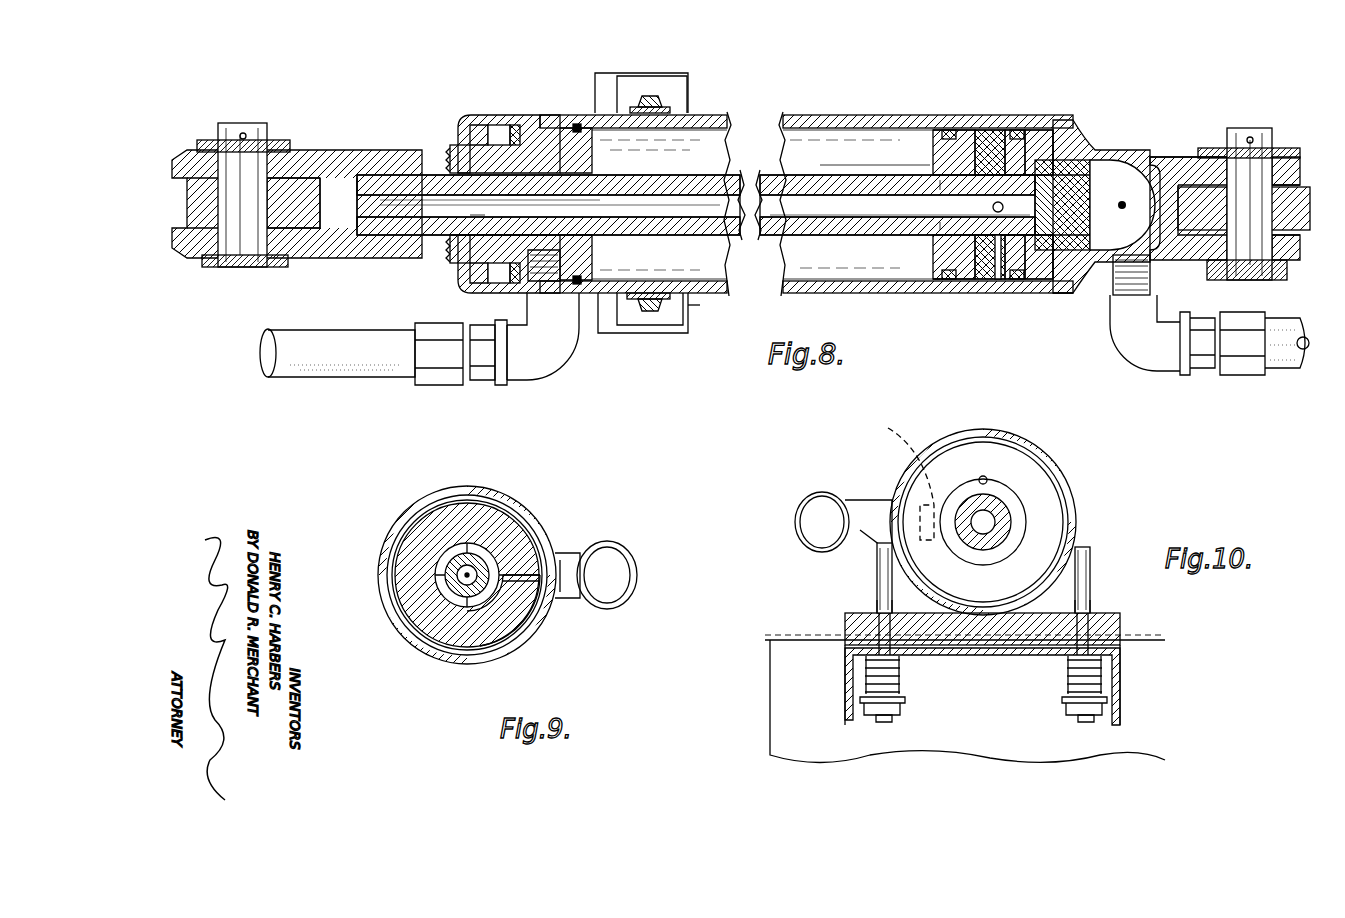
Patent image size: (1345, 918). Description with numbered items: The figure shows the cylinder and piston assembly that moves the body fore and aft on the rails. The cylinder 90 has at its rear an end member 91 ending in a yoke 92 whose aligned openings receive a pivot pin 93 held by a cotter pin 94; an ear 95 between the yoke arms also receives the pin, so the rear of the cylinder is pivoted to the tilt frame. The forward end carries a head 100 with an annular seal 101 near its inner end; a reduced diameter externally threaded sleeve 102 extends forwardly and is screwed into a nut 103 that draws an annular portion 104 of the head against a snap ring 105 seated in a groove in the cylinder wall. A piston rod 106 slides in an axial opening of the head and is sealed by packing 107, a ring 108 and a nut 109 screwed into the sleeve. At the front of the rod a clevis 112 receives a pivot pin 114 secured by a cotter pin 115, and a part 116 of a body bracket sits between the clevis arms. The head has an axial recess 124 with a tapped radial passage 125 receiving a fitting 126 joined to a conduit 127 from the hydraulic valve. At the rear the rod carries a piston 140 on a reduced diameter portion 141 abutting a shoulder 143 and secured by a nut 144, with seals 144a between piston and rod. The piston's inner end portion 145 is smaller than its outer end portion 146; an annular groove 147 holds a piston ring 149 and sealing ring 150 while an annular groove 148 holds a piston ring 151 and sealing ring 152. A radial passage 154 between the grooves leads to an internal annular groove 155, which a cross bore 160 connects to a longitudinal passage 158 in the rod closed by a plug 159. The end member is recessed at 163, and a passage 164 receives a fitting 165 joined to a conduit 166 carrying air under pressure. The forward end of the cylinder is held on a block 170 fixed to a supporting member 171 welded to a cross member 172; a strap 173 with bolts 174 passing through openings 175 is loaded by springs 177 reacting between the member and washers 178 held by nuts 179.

In FIG. 8, the cylinder 90 is at (742, 110).
In FIG. 9, the cylinder 90 is at (386, 528).
In FIG. 10, the cylinder 90 is at (1030, 450).
In FIG. 8, the end member 91 is at (1130, 120).
In FIG. 8, the yoke 92 is at (1183, 157).
In FIG. 8, the pivot pin 93 is at (1250, 255).
In FIG. 8, the cotter pin 94 is at (1250, 137).
In FIG. 8, the ear 95 is at (1200, 195).
In FIG. 8, the head 100 is at (542, 126).
In FIG. 8, the annular seal 101 is at (578, 124).
In FIG. 8, the externally threaded sleeve 102 is at (500, 140).
In FIG. 8, the nut 103 is at (463, 135).
In FIG. 8, the annular portion 104 is at (540, 130).
In FIG. 8, the snap ring 105 is at (515, 128).
In FIG. 8, the piston rod 106 is at (730, 186).
In FIG. 9, the piston rod 106 is at (445, 570).
In FIG. 10, the piston rod 106 is at (1000, 512).
In FIG. 8, the packing 107 is at (507, 196).
In FIG. 8, the ring 108 is at (484, 218).
In FIG. 8, the nut 109 is at (455, 162).
In FIG. 8, the clevis 112 is at (384, 250).
In FIG. 8, the pivot pin 114 is at (240, 248).
In FIG. 8, the cotter pin 115 is at (243, 133).
In FIG. 8, the bracket part 116 is at (300, 186).
In FIG. 8, the axial recess 124 is at (597, 172).
In FIG. 10, the axial recess 124 is at (982, 478).
In FIG. 8, the tapped radial passage 125 is at (596, 266).
In FIG. 10, the tapped radial passage 125 is at (900, 440).
In FIG. 8, the fitting 126 is at (562, 356).
In FIG. 10, the fitting 126 is at (862, 520).
In FIG. 8, the conduit 127 is at (328, 367).
In FIG. 8, the piston 140 is at (940, 150).
In FIG. 9, the piston 140 is at (425, 640).
In FIG. 8, the reduced diameter portion 141 is at (980, 165).
In FIG. 9, the reduced diameter portion 141 is at (490, 640).
In FIG. 8, the shoulder 143 is at (940, 232).
In FIG. 8, the nut 144 is at (1088, 275).
In FIG. 8, the seals 144a is at (928, 162).
In FIG. 8, the inner end portion 145 is at (938, 283).
In FIG. 8, the outer end portion 146 is at (1053, 292).
In FIG. 8, the annular groove 147 is at (1042, 160).
In FIG. 8, the annular groove 148 is at (940, 236).
In FIG. 8, the piston ring 149 is at (1015, 128).
In FIG. 8, the sealing ring 150 is at (1035, 128).
In FIG. 8, the piston ring 151 is at (950, 128).
In FIG. 8, the sealing ring 152 is at (1012, 134).
In FIG. 8, the radial passage 154 is at (998, 282).
In FIG. 9, the radial passage 154 is at (520, 600).
In FIG. 8, the internal annular groove 155 is at (1000, 128).
In FIG. 9, the internal annular groove 155 is at (488, 548).
In FIG. 8, the longitudinal passage 158 is at (802, 216).
In FIG. 9, the longitudinal passage 158 is at (460, 582).
In FIG. 10, the longitudinal passage 158 is at (980, 535).
In FIG. 8, the plug 159 is at (1130, 190).
In FIG. 8, the cross bore 160 is at (991, 207).
In FIG. 9, the cross bore 160 is at (465, 565).
In FIG. 8, the recess 163 is at (1160, 157).
In FIG. 8, the passage 164 is at (1152, 272).
In FIG. 8, the fitting 165 is at (1137, 352).
In FIG. 9, the fitting 165 is at (572, 553).
In FIG. 8, the conduit 166 is at (1275, 370).
In FIG. 8, the block 170 is at (673, 82).
In FIG. 10, the block 170 is at (1122, 622).
In FIG. 8, the supporting member 171 is at (652, 73).
In FIG. 10, the supporting member 171 is at (1122, 684).
In FIG. 10, the cross member 172 is at (790, 656).
In FIG. 8, the strap 173 is at (710, 307).
In FIG. 10, the strap 173 is at (968, 432).
In FIG. 8, the bolts 174 is at (648, 98).
In FIG. 10, the bolts 174 is at (877, 572).
In FIG. 10, the openings 175 is at (858, 612).
In FIG. 10, the springs 177 is at (900, 672).
In FIG. 10, the washers 178 is at (906, 699).
In FIG. 10, the nuts 179 is at (893, 720).